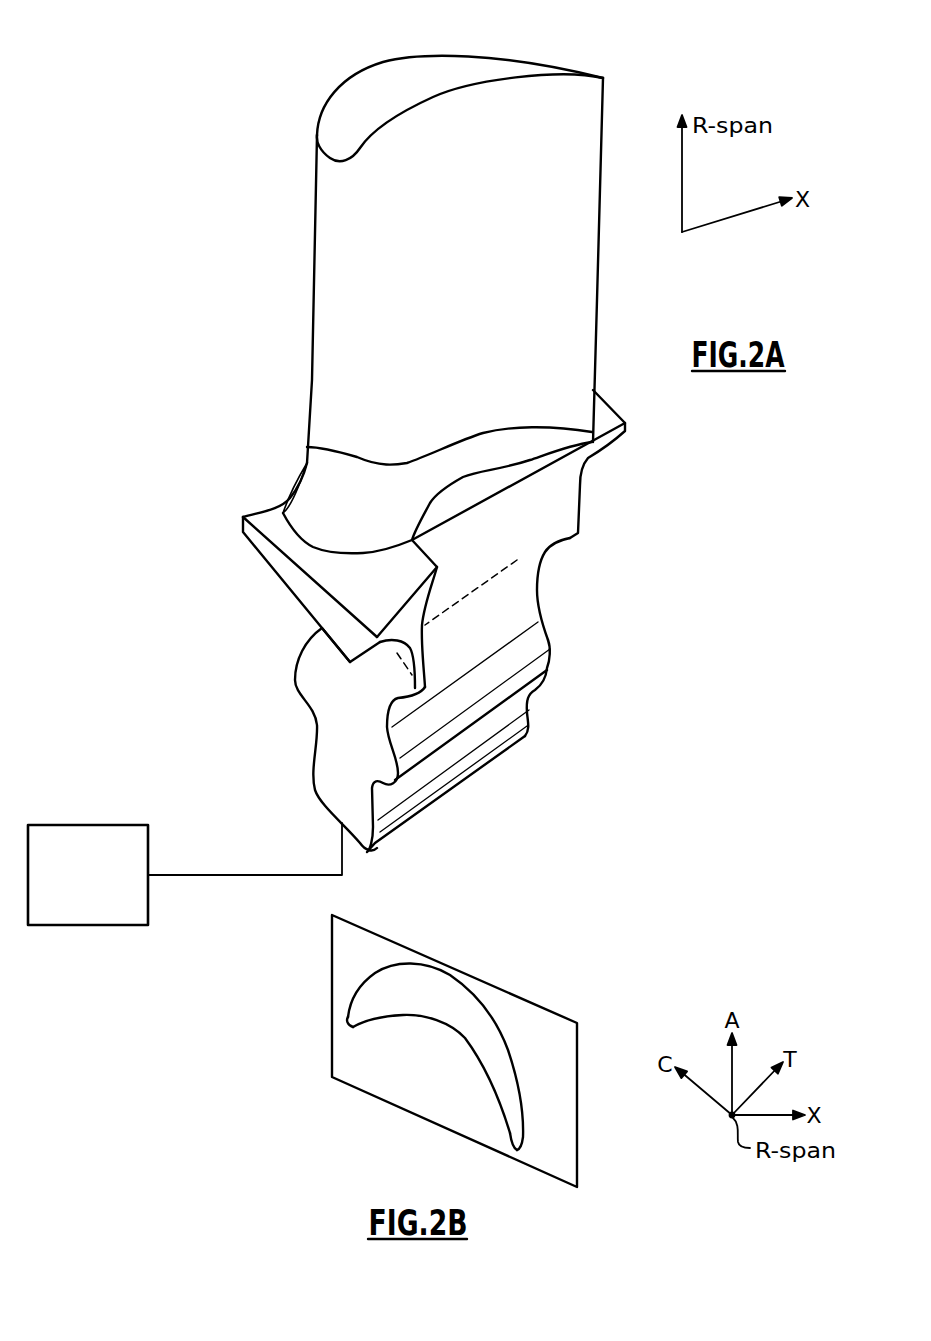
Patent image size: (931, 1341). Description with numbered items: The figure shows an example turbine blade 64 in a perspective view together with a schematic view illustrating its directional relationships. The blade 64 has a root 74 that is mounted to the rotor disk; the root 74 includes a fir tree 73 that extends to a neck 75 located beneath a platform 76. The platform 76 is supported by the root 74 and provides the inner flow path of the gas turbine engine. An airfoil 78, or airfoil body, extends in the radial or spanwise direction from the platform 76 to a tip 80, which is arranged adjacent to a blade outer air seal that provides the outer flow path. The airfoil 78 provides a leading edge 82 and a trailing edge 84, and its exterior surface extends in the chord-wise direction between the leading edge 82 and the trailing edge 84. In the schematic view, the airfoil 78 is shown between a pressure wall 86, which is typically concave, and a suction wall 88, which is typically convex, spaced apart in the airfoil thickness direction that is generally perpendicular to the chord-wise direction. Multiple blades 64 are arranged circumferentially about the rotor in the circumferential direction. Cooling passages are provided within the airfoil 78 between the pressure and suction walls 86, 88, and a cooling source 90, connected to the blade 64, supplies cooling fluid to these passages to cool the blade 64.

In FIG. 2A, the turbine blade 64 is at (286, 224).
In FIG. 2B, the turbine blade 64 is at (549, 950).
In FIG. 2A, the fir tree 73 is at (518, 657).
In FIG. 2A, the root 74 is at (333, 722).
In FIG. 2A, the neck 75 is at (490, 562).
In FIG. 2A, the platform 76 is at (493, 477).
In FIG. 2B, the platform 76 is at (389, 925).
In FIG. 2A, the airfoil 78 is at (560, 324).
In FIG. 2B, the airfoil 78 is at (351, 1035).
In FIG. 2A, the tip 80 is at (353, 80).
In FIG. 2A, the leading edge 82 is at (310, 288).
In FIG. 2B, the leading edge 82 is at (347, 1017).
In FIG. 2A, the trailing edge 84 is at (601, 110).
In FIG. 2B, the trailing edge 84 is at (518, 1152).
In FIG. 2A, the pressure wall 86 is at (482, 273).
In FIG. 2B, the pressure wall 86 is at (447, 1032).
In FIG. 2A, the suction wall 88 is at (459, 41).
In FIG. 2B, the suction wall 88 is at (455, 977).
In FIG. 2A, the cooling source 90 is at (75, 824).